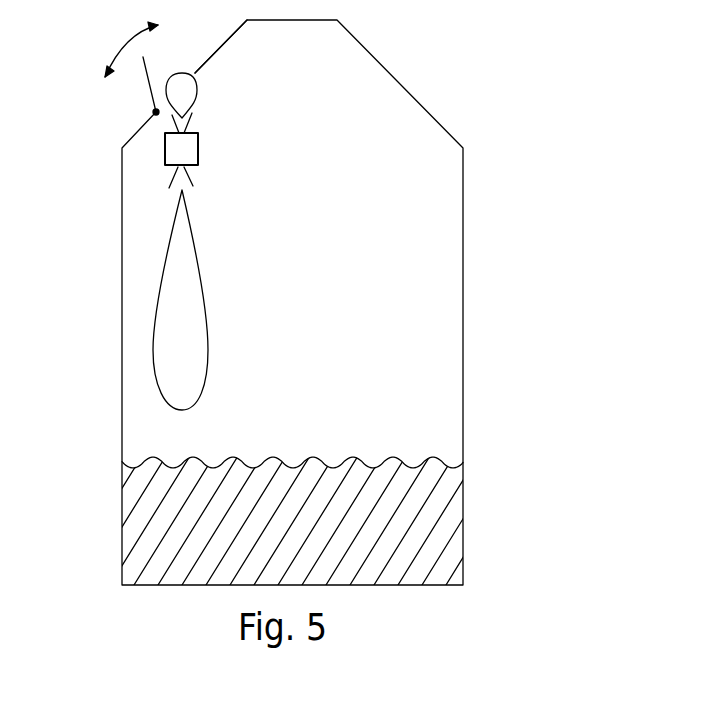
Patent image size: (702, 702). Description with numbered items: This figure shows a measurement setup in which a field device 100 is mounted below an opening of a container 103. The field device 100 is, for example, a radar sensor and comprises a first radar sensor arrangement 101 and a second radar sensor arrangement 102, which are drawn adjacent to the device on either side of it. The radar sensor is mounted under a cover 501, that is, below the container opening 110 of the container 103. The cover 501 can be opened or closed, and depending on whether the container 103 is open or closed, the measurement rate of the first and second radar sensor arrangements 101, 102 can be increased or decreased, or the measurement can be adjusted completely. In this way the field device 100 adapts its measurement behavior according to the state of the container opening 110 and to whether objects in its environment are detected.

The field device 100 is at (198, 150).
The first radar sensor arrangement 101 is at (193, 176).
The second radar sensor arrangement 102 is at (189, 116).
The container 103 is at (463, 283).
The container opening 110 is at (196, 71).
The cover 501 is at (146, 72).